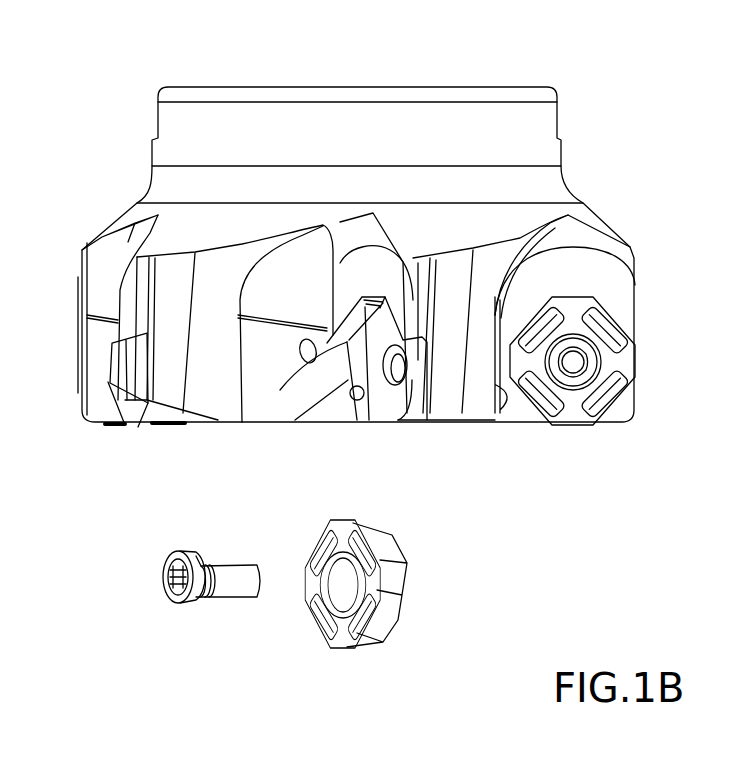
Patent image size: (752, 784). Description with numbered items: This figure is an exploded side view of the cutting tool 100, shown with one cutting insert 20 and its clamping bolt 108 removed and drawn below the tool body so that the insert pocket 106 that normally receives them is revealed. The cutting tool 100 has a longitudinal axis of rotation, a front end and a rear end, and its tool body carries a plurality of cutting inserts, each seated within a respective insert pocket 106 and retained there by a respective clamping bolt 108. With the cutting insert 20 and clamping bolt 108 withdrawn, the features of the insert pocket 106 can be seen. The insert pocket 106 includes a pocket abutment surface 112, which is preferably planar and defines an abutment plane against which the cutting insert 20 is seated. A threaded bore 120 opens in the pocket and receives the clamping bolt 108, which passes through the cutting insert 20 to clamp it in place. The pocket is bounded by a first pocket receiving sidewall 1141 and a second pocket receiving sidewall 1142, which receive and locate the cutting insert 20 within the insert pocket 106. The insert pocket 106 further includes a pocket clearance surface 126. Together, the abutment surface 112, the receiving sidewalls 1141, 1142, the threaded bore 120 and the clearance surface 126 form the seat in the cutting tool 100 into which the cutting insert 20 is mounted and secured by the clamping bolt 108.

The cutting tool 100 is at (178, 70).
The insert pocket 106 is at (433, 484).
The clamping bolt 108 is at (221, 590).
The cutting insert 20 is at (333, 620).
The first pocket receiving sidewall 1141 is at (301, 366).
The second pocket receiving sidewall 1142 is at (340, 372).
The threaded bore 120 is at (375, 400).
The pocket abutment surface 112 is at (412, 380).
The pocket clearance surface 126 is at (436, 413).